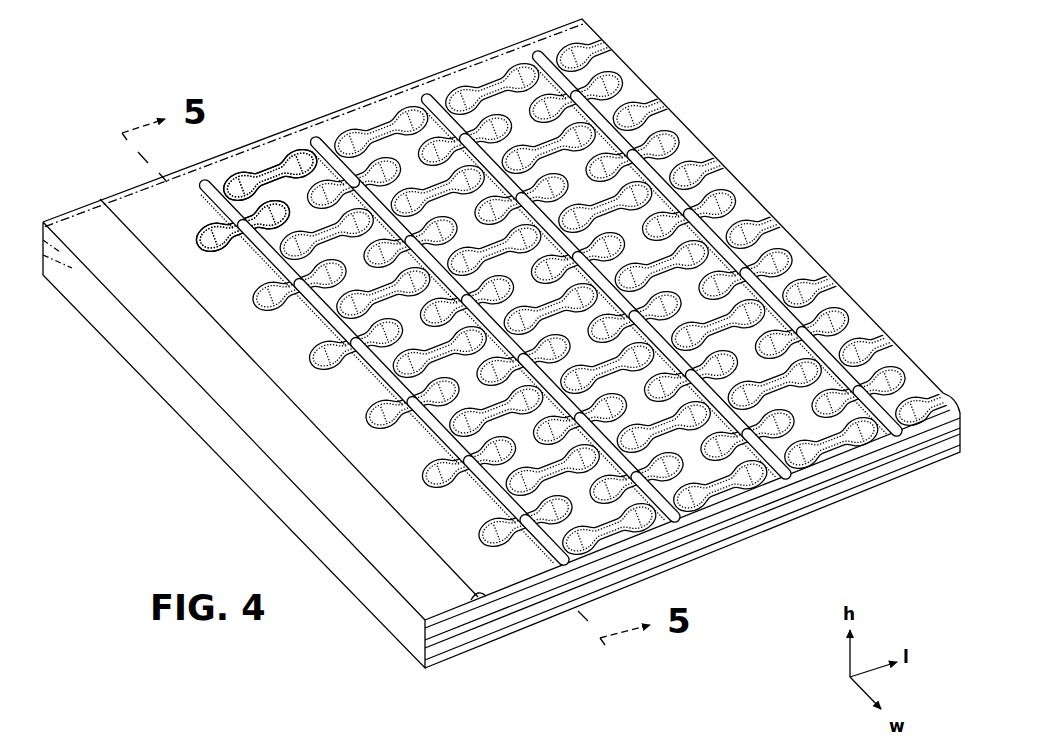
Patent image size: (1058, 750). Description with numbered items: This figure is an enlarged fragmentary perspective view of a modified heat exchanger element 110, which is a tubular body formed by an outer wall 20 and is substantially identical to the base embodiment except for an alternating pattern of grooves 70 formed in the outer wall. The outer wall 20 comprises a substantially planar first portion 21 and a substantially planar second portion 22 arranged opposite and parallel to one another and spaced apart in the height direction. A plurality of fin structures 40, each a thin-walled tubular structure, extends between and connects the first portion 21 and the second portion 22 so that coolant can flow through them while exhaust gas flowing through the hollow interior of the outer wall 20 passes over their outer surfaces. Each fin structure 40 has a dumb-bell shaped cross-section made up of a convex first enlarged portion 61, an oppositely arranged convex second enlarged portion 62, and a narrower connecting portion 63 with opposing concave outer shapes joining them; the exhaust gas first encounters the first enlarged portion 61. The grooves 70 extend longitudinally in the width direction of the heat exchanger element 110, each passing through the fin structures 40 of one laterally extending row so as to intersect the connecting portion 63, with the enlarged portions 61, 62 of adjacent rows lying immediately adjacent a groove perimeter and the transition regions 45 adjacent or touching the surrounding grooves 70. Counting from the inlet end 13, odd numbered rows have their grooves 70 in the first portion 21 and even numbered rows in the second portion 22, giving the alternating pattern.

The heat exchanger element 110 is at (518, 339).
The outer wall 20 is at (376, 106).
The inlet end 13 is at (258, 490).
The first portion 21 is at (478, 590).
The second portion 22 is at (533, 618).
The fin structures 40 is at (380, 408).
The transition region 45 is at (308, 138).
The first enlarged portion 61 is at (188, 228).
The second enlarged portion 62 is at (235, 210).
The connecting portion 63 is at (271, 186).
The grooves 70 is at (890, 432).